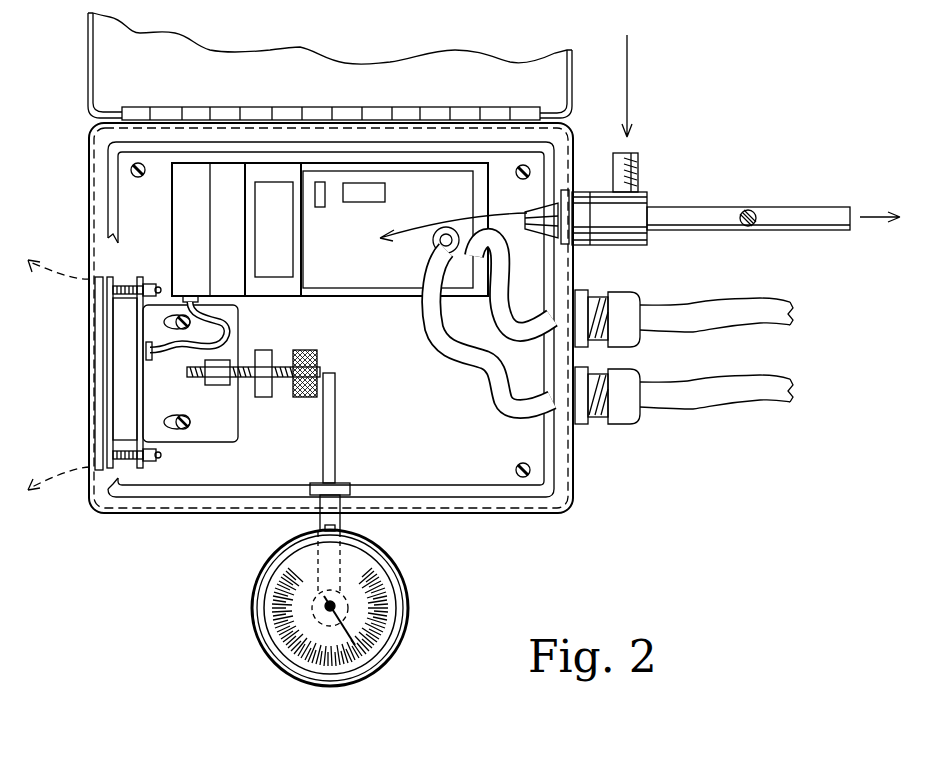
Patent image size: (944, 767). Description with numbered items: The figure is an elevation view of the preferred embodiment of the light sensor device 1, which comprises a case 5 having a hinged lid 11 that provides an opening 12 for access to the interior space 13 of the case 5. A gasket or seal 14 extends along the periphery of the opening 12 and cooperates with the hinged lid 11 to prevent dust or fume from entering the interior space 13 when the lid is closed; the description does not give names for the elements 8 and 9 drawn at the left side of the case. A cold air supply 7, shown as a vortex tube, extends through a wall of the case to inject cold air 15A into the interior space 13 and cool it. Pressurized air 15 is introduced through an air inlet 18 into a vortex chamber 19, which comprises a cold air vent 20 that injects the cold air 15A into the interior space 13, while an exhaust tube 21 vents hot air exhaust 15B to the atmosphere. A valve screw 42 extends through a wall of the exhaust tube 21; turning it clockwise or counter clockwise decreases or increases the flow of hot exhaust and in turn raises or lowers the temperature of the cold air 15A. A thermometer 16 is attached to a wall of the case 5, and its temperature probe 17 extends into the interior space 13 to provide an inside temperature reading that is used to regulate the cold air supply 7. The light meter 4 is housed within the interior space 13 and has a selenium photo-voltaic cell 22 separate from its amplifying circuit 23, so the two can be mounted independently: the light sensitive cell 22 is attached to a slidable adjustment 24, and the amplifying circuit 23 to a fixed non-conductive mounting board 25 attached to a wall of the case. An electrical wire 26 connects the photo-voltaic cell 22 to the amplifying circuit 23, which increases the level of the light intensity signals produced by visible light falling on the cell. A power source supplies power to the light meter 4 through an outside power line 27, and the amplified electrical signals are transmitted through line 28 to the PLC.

The sensor device 1 is at (117, 537).
The light meter 4 is at (235, 212).
The case 5 is at (523, 517).
The cold air supply 7 is at (687, 171).
The mounting plate 8 is at (92, 373).
The pivoting direction 9 is at (75, 277).
The hinged lid 11 is at (107, 84).
The opening 12 is at (262, 153).
The interior space 13 is at (433, 434).
The gasket 14 is at (563, 264).
The pressurized air 15 is at (630, 82).
The cold air 15A is at (423, 230).
The hot air exhaust 15B is at (862, 215).
The thermometer 16 is at (287, 593).
The temperature probe 17 is at (335, 402).
The air inlet 18 is at (645, 160).
The vortex chamber 19 is at (608, 232).
The cold air vent 20 is at (538, 200).
The exhaust tube 21 is at (717, 213).
The photo-voltaic cell 22 is at (125, 378).
The amplifying circuit 23 is at (352, 247).
The slidable adjustment 24 is at (242, 407).
The mounting board 25 is at (388, 476).
The electrical wire 26 is at (223, 324).
The power line 27 is at (703, 400).
The signal line 28 is at (755, 318).
The valve screw 42 is at (752, 223).